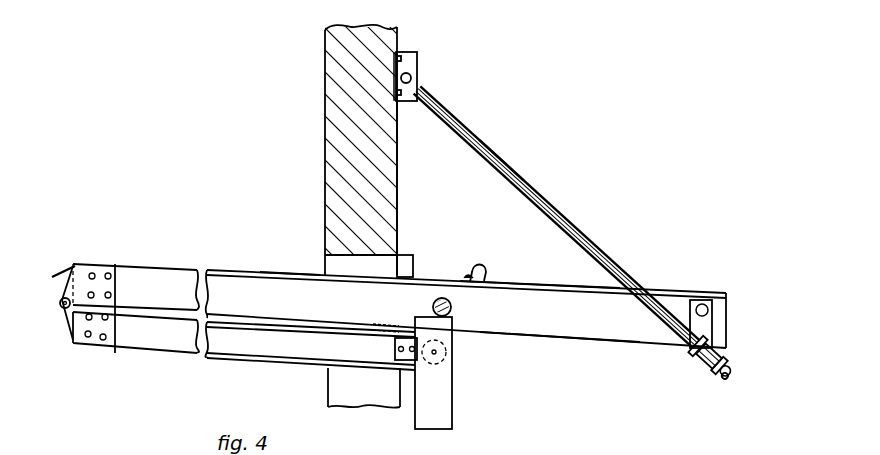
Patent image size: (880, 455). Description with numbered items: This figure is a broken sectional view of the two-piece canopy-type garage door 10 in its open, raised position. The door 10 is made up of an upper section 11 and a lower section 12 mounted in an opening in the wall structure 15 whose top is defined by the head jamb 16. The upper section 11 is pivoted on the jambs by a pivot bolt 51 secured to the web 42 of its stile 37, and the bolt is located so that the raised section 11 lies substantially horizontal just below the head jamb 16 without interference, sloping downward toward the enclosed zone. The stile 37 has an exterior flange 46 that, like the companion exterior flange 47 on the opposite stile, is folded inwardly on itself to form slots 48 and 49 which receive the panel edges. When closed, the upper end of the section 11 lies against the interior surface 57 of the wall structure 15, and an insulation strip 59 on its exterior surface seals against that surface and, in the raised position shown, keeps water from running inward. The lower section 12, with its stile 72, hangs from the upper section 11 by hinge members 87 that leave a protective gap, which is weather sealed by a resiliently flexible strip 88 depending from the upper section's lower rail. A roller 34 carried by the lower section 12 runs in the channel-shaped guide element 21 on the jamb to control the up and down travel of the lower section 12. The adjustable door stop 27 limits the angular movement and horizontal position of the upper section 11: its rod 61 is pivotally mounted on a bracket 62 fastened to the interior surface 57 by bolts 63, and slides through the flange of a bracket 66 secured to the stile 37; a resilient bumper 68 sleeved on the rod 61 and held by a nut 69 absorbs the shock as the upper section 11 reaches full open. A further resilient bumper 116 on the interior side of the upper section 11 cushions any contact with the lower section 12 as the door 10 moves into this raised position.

The garage door 10 is at (280, 254).
The upper section 11 is at (533, 340).
The lower section 12 is at (222, 366).
The head jamb 16 is at (345, 148).
The guide element 21 is at (447, 400).
The adjustable door stop 27 is at (514, 134).
The roller 34 is at (447, 355).
The stile 37 is at (581, 328).
The web 42 is at (560, 303).
The exterior flange 46 is at (537, 277).
The pivot bolt 51 is at (432, 304).
The interior surface 57 is at (397, 162).
The insulation strip 59 is at (475, 264).
The rod 61 is at (585, 238).
The bracket 62 is at (411, 100).
The bolts 63 is at (407, 54).
The bracket 66 is at (720, 318).
The resilient bumper 68 is at (697, 368).
The nut 69 is at (733, 370).
The stile 72 is at (265, 343).
The hinge members 87 is at (67, 315).
The resiliently flexible strip 88 is at (60, 267).
The resilient bumper 116 is at (373, 323).
The wall structure 15 is at (85, 447).
The slot 48 is at (155, 447).
The slot 49 is at (652, 445).
The exterior flange 47 is at (700, 445).